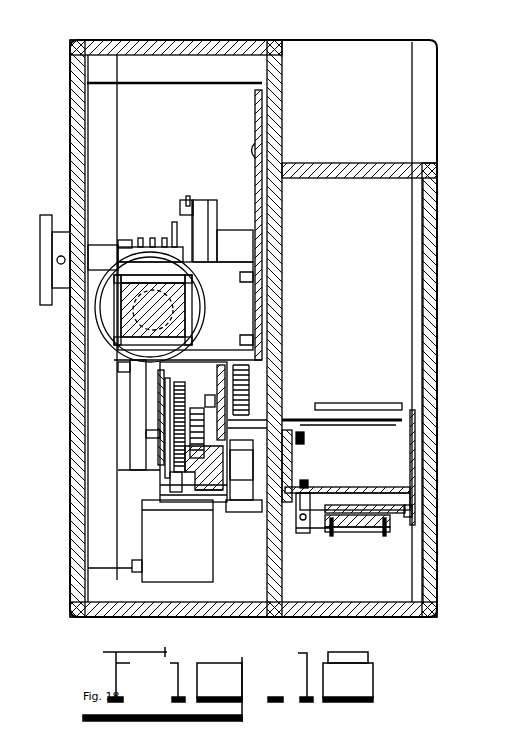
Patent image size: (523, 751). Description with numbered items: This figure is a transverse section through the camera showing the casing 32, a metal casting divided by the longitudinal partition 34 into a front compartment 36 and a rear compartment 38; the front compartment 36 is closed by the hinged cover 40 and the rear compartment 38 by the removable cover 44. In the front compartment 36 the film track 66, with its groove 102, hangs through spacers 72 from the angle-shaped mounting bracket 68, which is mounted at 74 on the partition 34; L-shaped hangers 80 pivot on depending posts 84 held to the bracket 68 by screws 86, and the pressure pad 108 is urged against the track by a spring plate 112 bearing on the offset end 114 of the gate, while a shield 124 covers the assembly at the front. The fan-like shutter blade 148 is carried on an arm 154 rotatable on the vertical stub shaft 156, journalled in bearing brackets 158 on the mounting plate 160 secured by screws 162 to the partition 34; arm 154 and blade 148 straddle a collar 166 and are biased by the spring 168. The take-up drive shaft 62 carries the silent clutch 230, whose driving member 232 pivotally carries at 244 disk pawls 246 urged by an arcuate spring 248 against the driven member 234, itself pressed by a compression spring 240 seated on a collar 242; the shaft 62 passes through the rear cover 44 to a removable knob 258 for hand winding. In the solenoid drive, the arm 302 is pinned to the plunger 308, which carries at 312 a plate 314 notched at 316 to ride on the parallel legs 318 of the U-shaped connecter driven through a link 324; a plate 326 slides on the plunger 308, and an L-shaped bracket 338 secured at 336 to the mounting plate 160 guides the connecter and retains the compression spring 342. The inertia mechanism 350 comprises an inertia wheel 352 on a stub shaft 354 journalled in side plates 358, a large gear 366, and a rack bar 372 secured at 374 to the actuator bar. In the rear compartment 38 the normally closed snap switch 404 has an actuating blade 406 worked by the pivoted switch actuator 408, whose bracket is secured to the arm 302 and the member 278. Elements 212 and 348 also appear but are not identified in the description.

The casing 32 is at (254, 41).
The longitudinal partition 34 is at (277, 346).
The front compartment 36 is at (412, 560).
The rear compartment 38 is at (122, 528).
The cover 40 is at (433, 332).
The cover 44 is at (82, 416).
The drive shaft 62 is at (103, 250).
The track 66 is at (406, 518).
The mounting bracket 68 is at (340, 487).
The spacers 72 is at (386, 493).
The bracket mounting 74 is at (304, 438).
The L-shaped hangers 80 is at (314, 530).
The depending posts 84 is at (298, 524).
The screws 86 is at (306, 480).
The groove 102 is at (346, 512).
The pressure pad 108 is at (358, 533).
The spring plate 112 is at (331, 536).
The offset end 114 is at (384, 536).
The shield 124 is at (416, 468).
The shutter blade 148 is at (398, 411).
The arm 154 is at (344, 426).
The stub shaft 156 is at (258, 396).
The bearing brackets 158 is at (250, 380).
The mounting plate 160 is at (255, 197).
The screws 162 is at (253, 150).
The collar 166 is at (300, 432).
The spring 168 is at (208, 397).
The cross member 212 is at (240, 514).
The clutch 230 is at (195, 194).
The driving clutch member 232 is at (217, 216).
The driven clutch member 234 is at (173, 233).
The compression spring 240 is at (146, 244).
The collar 242 is at (124, 243).
The pawl pivot 244 is at (181, 210).
The pawls 246 is at (201, 222).
The arcuate spring 248 is at (187, 202).
The knob 258 is at (47, 284).
The member 278 is at (228, 366).
The arm 302 is at (215, 388).
The plunger 308 is at (190, 313).
The plate securing 312 is at (196, 422).
The plate 314 is at (142, 346).
The notches 316 is at (132, 287).
The parallel legs 318 is at (188, 331).
The link 324 is at (172, 300).
The plate 326 is at (120, 383).
The bracket securing 336 is at (241, 277).
The L-shaped bracket 338 is at (208, 266).
The compression spring 342 is at (96, 322).
The stop 348 is at (150, 440).
The inertia mechanism 350 is at (128, 484).
The inertia wheel 352 is at (134, 430).
The stub shaft 354 is at (186, 412).
The side plates 358 is at (186, 470).
The gear 366 is at (168, 400).
The rack bar 372 is at (176, 493).
The rack bar securing 374 is at (207, 495).
The snap switch 404 is at (179, 578).
The actuating blade 406 is at (186, 500).
The switch actuator 408 is at (168, 494).